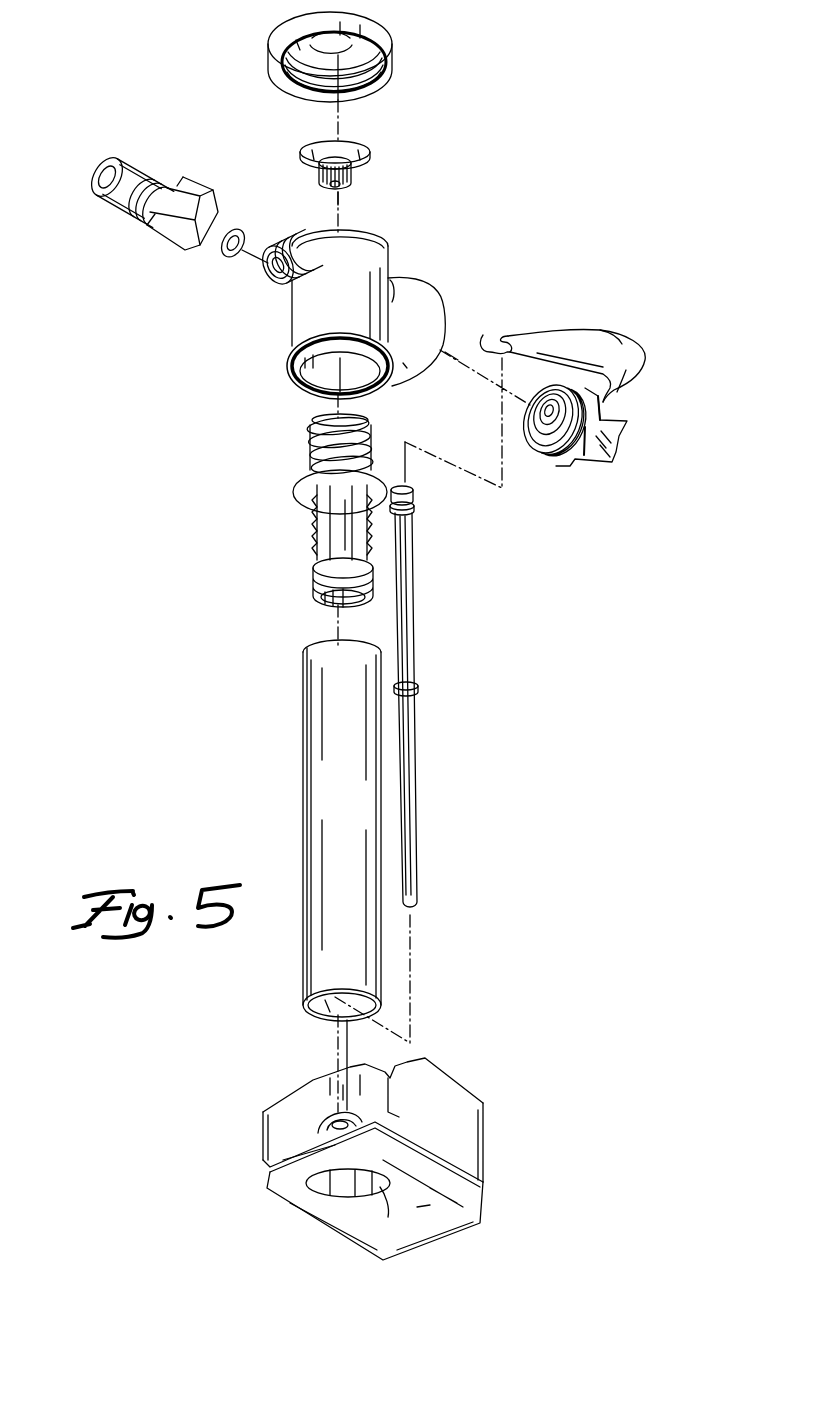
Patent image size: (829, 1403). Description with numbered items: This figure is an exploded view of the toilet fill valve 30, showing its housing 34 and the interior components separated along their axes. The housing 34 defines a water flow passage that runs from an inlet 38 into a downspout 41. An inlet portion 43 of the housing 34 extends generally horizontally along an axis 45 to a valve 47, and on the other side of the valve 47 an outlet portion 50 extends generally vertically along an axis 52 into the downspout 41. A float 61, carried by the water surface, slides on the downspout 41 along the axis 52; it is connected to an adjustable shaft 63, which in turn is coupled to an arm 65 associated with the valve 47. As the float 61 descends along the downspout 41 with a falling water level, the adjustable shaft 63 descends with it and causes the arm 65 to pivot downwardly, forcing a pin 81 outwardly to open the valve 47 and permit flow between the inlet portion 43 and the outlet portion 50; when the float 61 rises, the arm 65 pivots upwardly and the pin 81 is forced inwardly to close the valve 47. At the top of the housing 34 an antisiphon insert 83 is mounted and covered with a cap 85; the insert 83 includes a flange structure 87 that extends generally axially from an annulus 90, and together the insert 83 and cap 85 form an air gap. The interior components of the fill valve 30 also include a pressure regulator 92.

The fill valve 30 is at (520, 107).
The housing 34 is at (325, 313).
The inlet 38 is at (152, 155).
The downspout 41 is at (337, 760).
The inlet portion 43 is at (407, 313).
The axis 45 is at (467, 350).
The valve 47 is at (556, 484).
The outlet portion 50 is at (303, 323).
The axis 52 is at (338, 205).
The float 61 is at (457, 1115).
The adjustable shaft 63 is at (410, 740).
The arm 65 is at (607, 350).
The pin 81 is at (542, 432).
The antisiphon insert 83 is at (365, 165).
The cap 85 is at (380, 38).
The flange structure 87 is at (323, 184).
The annulus 90 is at (310, 160).
The pressure regulator 92 is at (315, 443).